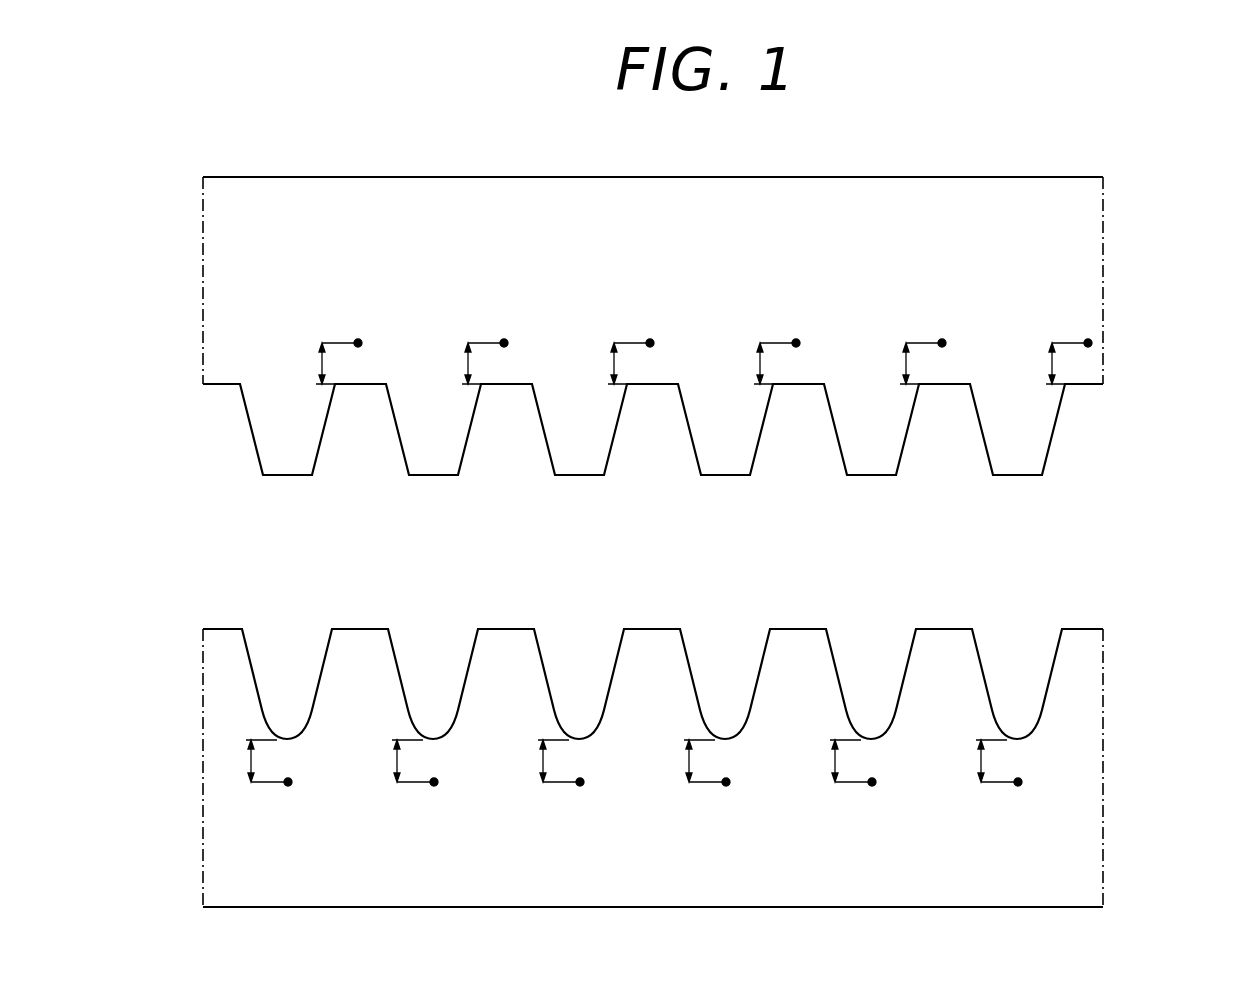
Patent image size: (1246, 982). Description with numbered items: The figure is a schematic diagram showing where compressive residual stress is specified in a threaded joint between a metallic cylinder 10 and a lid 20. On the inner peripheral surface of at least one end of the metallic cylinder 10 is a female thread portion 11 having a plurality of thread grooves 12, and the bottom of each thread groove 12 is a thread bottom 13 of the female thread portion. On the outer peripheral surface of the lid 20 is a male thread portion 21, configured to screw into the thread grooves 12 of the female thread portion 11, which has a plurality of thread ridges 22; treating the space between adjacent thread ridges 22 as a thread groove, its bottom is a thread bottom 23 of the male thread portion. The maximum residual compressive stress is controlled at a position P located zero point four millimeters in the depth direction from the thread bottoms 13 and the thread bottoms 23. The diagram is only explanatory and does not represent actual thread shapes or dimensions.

The metallic cylinder 10 is at (838, 915).
The female thread portion 11 is at (1134, 686).
The thread groove 12 is at (653, 623).
The thread bottom of the female thread portion 13 is at (605, 755).
The lid 20 is at (838, 168).
The male thread portion 21 is at (1130, 448).
The thread ridge 22 is at (652, 500).
The thread bottom of the male thread portion 23 is at (677, 383).